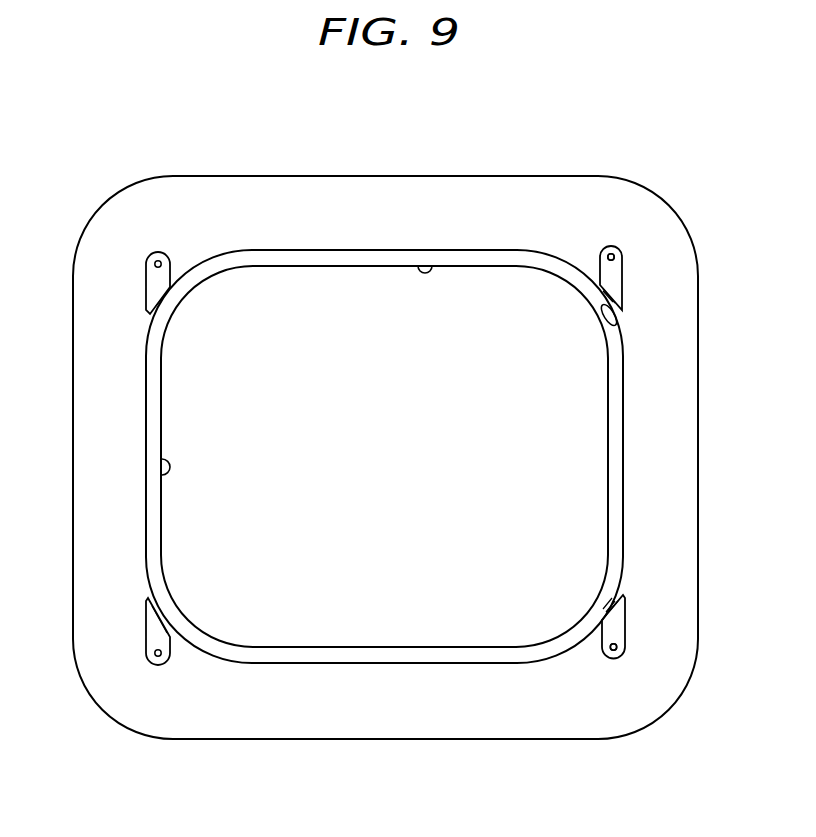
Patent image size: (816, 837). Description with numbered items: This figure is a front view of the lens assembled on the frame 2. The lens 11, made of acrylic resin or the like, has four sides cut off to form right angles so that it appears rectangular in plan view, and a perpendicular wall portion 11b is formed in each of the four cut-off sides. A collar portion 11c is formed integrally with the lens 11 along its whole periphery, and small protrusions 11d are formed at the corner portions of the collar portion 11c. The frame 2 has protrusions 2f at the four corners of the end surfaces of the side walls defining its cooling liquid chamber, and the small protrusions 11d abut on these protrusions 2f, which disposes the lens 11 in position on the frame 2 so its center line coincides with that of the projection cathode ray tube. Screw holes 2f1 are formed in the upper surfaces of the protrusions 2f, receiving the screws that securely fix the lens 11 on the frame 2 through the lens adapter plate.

The frame 2 is at (305, 176).
The lens 11 is at (669, 410).
The perpendicular wall portion 11b is at (420, 270).
The collar portion 11c is at (621, 488).
The small protrusions 11d is at (618, 323).
The protrusions 2f is at (623, 277).
The screw holes 2f1 is at (613, 257).